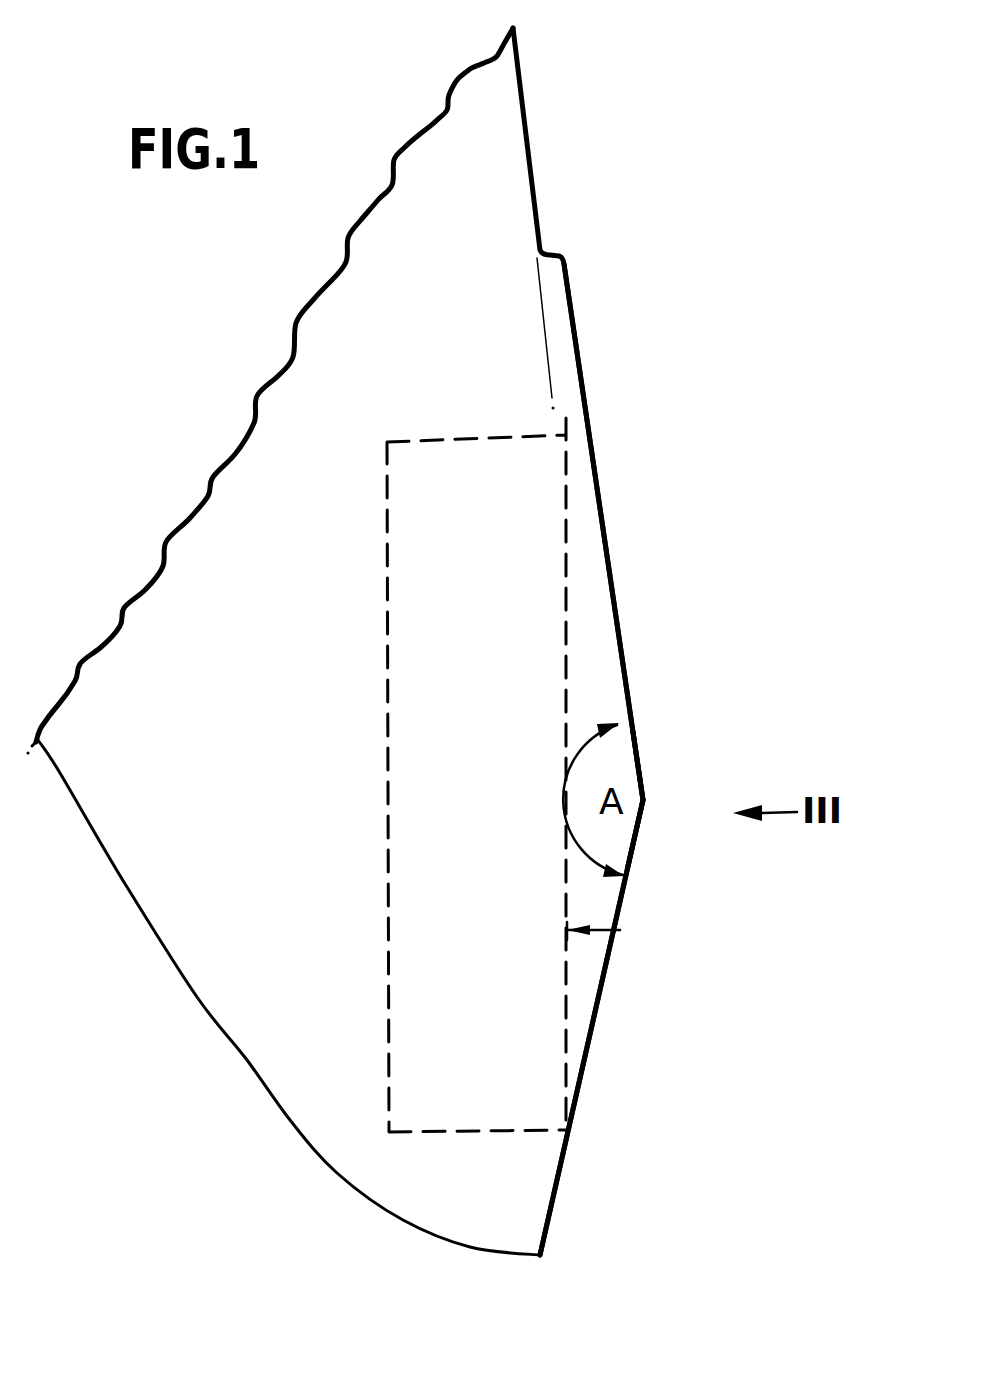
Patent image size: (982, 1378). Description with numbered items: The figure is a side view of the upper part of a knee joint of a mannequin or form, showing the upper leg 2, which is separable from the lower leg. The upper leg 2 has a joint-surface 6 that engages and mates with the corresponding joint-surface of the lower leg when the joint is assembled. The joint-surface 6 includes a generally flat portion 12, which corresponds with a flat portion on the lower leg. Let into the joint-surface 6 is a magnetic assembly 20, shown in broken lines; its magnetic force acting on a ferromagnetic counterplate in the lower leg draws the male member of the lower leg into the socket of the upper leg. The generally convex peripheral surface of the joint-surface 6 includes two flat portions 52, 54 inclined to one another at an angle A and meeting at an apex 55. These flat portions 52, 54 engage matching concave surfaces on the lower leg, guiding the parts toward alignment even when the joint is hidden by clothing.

The upper leg 2 is at (232, 930).
The joint-surface 6 is at (650, 566).
The generally flat portion 12 is at (620, 930).
The magnetic assembly 20 is at (567, 513).
The flat portion 52 is at (630, 710).
The flat portion 54 is at (603, 988).
The apex 55 is at (645, 800).